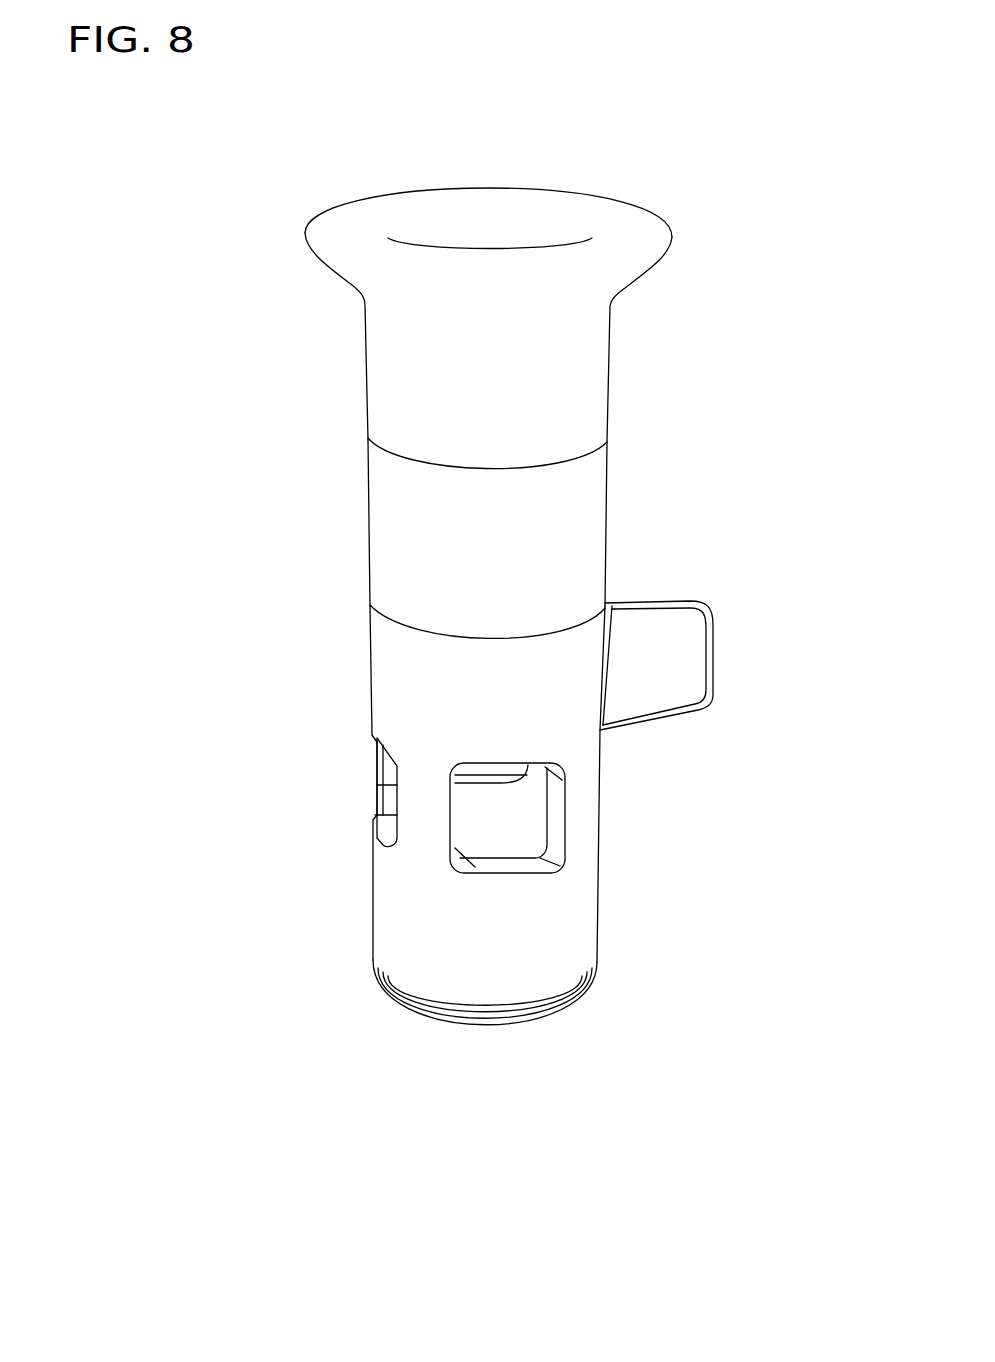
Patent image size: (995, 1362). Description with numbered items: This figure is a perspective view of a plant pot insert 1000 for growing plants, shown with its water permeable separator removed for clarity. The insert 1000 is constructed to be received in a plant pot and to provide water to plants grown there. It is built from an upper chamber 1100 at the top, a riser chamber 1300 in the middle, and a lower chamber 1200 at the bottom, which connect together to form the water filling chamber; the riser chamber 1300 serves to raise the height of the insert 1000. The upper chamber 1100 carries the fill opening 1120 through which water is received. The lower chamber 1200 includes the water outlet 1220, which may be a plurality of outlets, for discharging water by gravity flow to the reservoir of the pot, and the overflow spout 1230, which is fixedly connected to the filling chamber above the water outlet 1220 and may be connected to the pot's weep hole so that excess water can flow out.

The plant pot insert 1000 is at (715, 572).
The upper chamber 1100 is at (367, 360).
The fill opening 1120 is at (510, 237).
The lower chamber 1200 is at (387, 905).
The water outlet 1220 is at (500, 808).
The overflow spout 1230 is at (667, 690).
The riser chamber 1300 is at (385, 550).